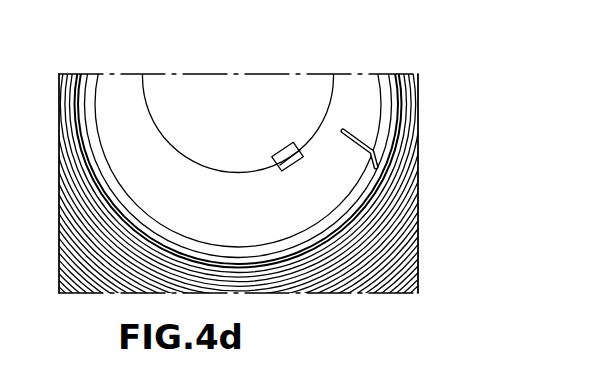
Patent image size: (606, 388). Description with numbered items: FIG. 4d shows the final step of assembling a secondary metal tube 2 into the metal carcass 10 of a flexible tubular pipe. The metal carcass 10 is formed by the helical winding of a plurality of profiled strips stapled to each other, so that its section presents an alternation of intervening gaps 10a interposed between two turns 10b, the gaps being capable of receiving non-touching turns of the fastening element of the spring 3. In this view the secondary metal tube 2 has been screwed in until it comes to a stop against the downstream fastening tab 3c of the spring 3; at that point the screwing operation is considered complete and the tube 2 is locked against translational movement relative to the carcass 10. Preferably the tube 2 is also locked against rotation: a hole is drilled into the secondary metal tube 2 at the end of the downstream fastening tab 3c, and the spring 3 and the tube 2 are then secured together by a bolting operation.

The secondary metal tube 2 is at (352, 98).
The spring 3 is at (340, 232).
The downstream fastening tab 3c is at (356, 140).
The metal carcass 10 is at (316, 282).
The intervening gap 10a is at (392, 258).
The turn 10b is at (122, 275).